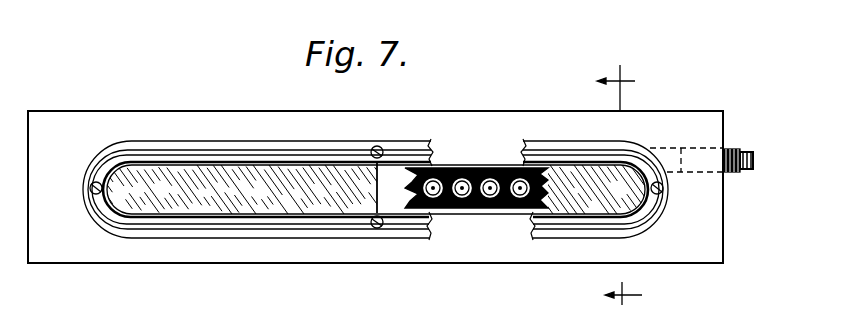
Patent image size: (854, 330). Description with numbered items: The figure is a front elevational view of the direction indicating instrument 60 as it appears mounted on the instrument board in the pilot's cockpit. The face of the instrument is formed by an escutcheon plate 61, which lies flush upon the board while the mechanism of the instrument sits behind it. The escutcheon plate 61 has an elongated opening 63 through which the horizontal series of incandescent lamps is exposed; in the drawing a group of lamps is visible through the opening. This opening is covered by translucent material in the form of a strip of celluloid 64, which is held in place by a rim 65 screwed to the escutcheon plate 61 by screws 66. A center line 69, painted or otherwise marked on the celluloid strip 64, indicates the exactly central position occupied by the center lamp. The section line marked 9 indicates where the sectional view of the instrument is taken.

The direction indicating instrument 60 is at (248, 104).
The escutcheon plate 61 is at (183, 261).
The elongated opening 63 is at (469, 168).
The strip of celluloid 64 is at (395, 199).
The rim 65 is at (337, 224).
The screws 66 is at (90, 190).
The center line 69 is at (388, 165).
The section line 9 is at (622, 194).